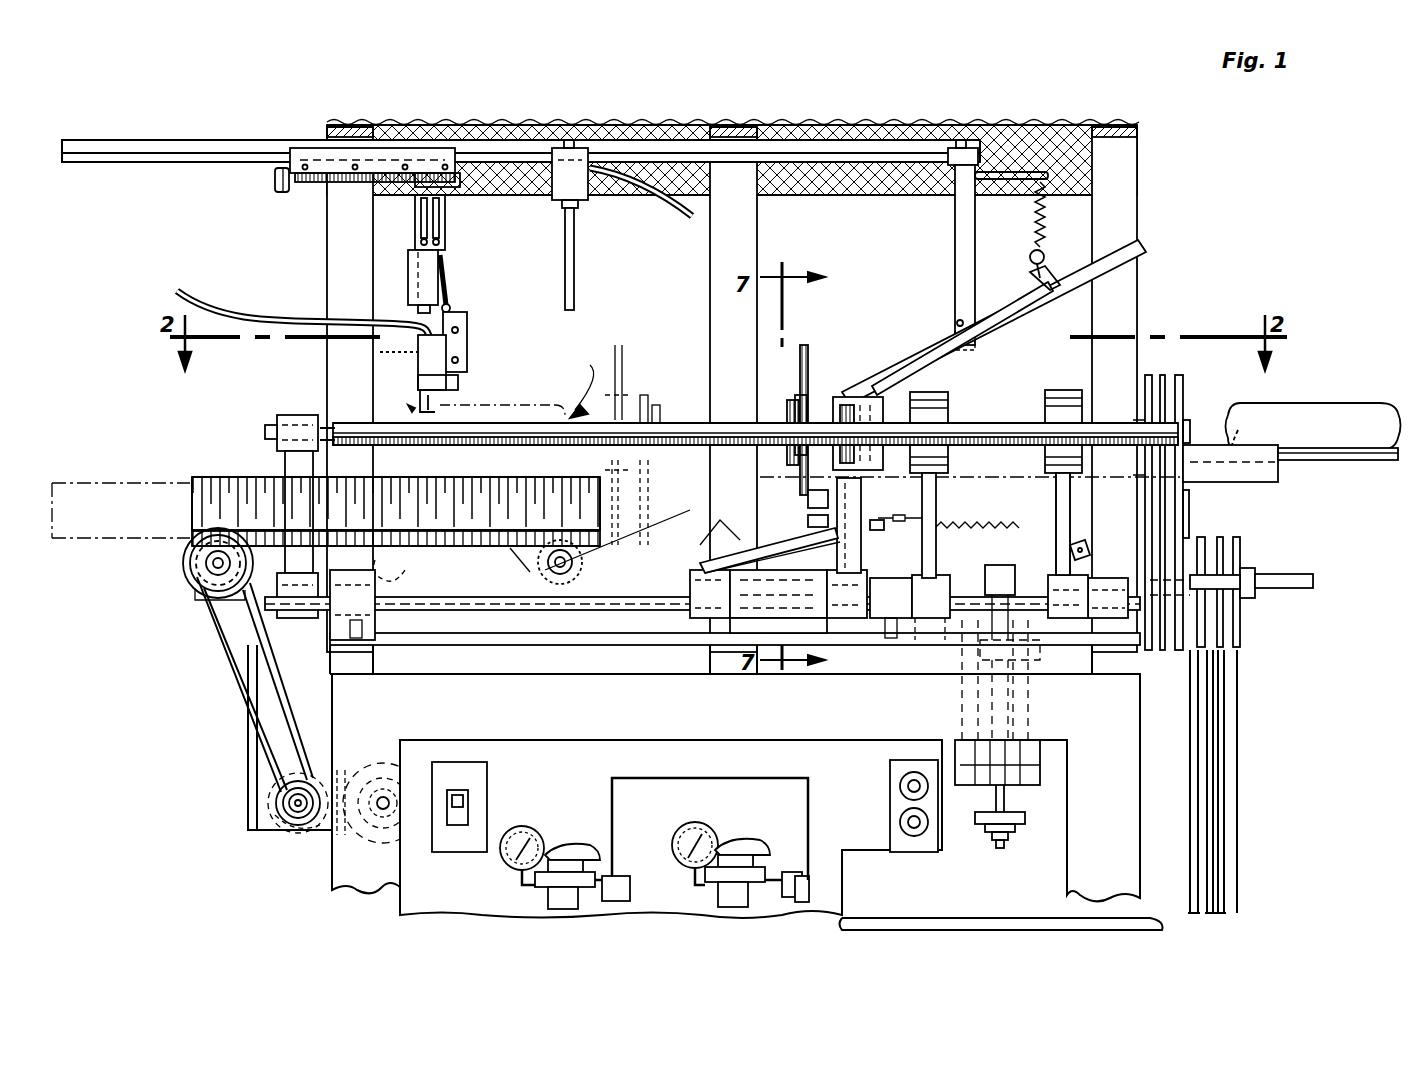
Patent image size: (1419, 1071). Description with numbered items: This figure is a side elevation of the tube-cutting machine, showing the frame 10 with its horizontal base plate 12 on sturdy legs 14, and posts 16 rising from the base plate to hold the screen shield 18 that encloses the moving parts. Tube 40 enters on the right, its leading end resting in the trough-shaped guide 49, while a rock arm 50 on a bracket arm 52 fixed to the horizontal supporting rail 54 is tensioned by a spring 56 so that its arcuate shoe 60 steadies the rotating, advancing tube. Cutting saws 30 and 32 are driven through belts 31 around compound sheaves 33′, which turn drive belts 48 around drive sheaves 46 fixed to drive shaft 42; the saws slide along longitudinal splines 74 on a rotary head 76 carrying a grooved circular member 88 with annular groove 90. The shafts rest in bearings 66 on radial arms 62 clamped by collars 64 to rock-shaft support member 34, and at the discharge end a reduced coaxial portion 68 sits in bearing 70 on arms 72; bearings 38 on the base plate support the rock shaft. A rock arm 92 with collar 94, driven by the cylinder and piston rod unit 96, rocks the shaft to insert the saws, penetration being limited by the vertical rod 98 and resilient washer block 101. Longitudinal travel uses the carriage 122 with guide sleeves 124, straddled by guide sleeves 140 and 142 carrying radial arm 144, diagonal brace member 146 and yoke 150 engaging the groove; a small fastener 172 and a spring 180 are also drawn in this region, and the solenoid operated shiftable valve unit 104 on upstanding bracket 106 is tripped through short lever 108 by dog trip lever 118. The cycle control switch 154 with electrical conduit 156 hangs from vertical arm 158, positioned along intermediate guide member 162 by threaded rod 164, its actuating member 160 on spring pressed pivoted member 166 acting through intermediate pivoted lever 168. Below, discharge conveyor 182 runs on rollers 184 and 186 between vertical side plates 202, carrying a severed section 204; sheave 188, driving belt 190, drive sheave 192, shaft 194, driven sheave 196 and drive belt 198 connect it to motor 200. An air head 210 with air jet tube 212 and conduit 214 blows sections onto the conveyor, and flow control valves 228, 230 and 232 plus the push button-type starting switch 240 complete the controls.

The frame 10 is at (613, 740).
The base plate 12 is at (630, 645).
The legs 14 is at (328, 872).
The posts 16 is at (327, 252).
The screen shield 18 is at (838, 128).
The cutting saw 30 is at (793, 356).
The belts 31 is at (1240, 697).
The cutting saw 32 is at (624, 354).
The compound sheaves 33′ is at (1236, 550).
The support member 34 is at (445, 642).
The bearings 38 is at (370, 635).
The tube 40 is at (497, 396).
The drive shaft 42 is at (579, 378).
The drive sheaves 46 is at (1184, 385).
The drive belts 48 is at (1182, 483).
The trough-shaped guide 49 is at (1278, 471).
The rock arm 50 is at (977, 345).
The bracket arm 52 is at (955, 240).
The horizontal supporting rail 54 is at (620, 145).
The spring 56 is at (1042, 222).
The arcuate shoe 60 is at (849, 395).
The radial arms 62 is at (932, 508).
The collars 64 is at (928, 620).
The bearings 66 is at (930, 395).
The reduced coaxial portion 68 is at (266, 429).
The bearing 70 is at (306, 416).
The arms 72 is at (285, 470).
The longitudinal splines 74 is at (750, 419).
The rotary head 76 is at (867, 382).
The circular member 88 is at (790, 400).
The annular groove 90 is at (835, 390).
The rock arm 92 is at (980, 670).
The collars 94 is at (1042, 567).
The cylinder and piston rod unit 96 is at (1020, 716).
The vertical rod 98 is at (1004, 798).
The resilient washer block 101 is at (1025, 816).
The solenoid operated shiftable valve unit 104 is at (420, 450).
The upstanding bracket 106 is at (463, 615).
The short lever 108 is at (532, 522).
The dog trip lever 118 is at (700, 554).
The carriage 122 is at (808, 620).
The guide sleeves 124 is at (747, 632).
The guide sleeve 140 is at (847, 617).
The guide sleeve 142 is at (710, 620).
The radial arm 144 is at (855, 505).
The diagonal brace member 146 is at (790, 542).
The yoke 150 is at (808, 490).
The cycle control switch 154 is at (408, 278).
The electrical conduit 156 is at (253, 298).
The vertical arm 158 is at (450, 283).
The actuating member 160 is at (415, 402).
The intermediate guide member 162 is at (315, 147).
The threaded rod 164 is at (318, 182).
The spring pressed pivoted member 166 is at (452, 364).
The intermediate pivoted lever 168 is at (470, 324).
The bolt 172 is at (875, 530).
The spring 180 is at (977, 528).
The discharge conveyor 182 is at (399, 560).
The roller 184 is at (537, 565).
The roller 186 is at (183, 565).
The sheave 188 is at (188, 585).
The driving belt 190 is at (224, 670).
The drive sheave 192 is at (280, 799).
The shaft 194 is at (278, 823).
The driven sheave 196 is at (270, 808).
The drive belt 198 is at (350, 774).
The motor 200 is at (415, 833).
The vertical side plates 202 is at (203, 475).
The severed section 204 is at (116, 481).
The air head 210 is at (556, 195).
The air jet tube 212 is at (565, 273).
The conduit 214 is at (687, 216).
The flow control valve 228 is at (602, 840).
The flow control valve 230 is at (780, 824).
The flow control valve 232 is at (468, 807).
The push button-type starting switch 240 is at (900, 799).